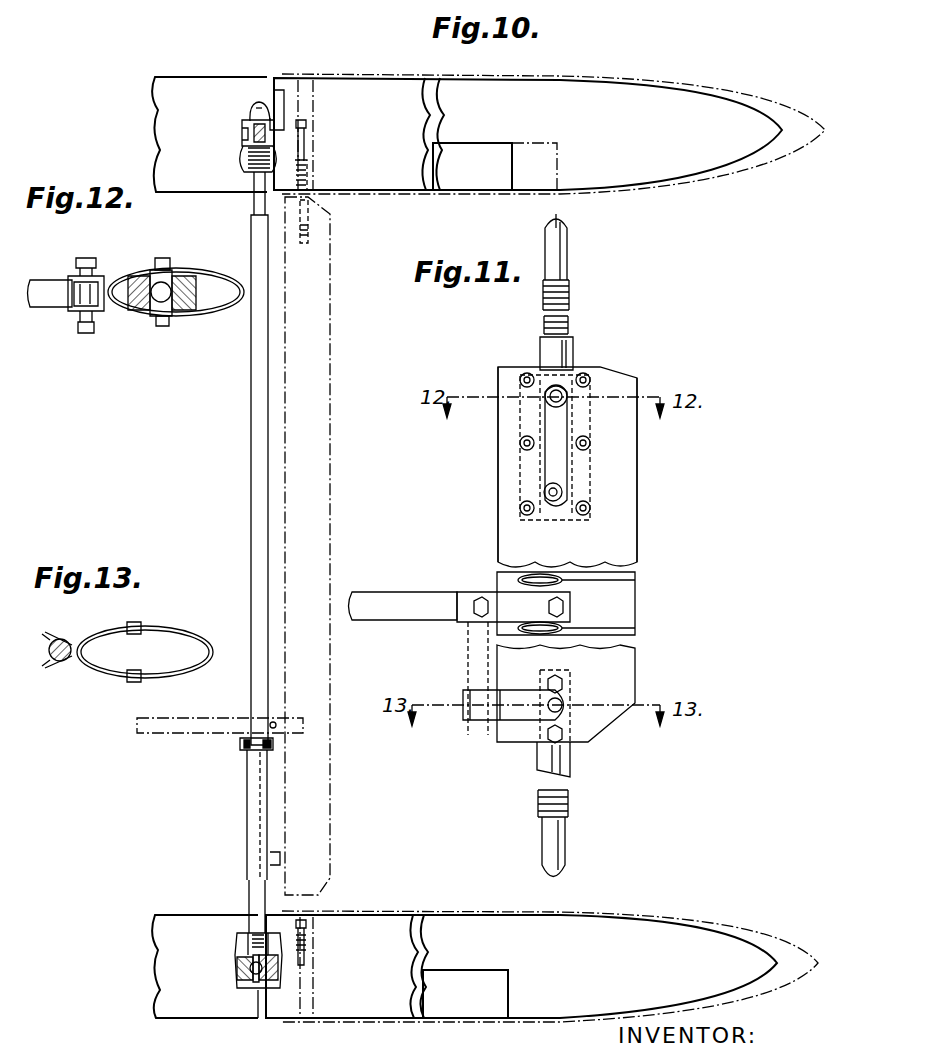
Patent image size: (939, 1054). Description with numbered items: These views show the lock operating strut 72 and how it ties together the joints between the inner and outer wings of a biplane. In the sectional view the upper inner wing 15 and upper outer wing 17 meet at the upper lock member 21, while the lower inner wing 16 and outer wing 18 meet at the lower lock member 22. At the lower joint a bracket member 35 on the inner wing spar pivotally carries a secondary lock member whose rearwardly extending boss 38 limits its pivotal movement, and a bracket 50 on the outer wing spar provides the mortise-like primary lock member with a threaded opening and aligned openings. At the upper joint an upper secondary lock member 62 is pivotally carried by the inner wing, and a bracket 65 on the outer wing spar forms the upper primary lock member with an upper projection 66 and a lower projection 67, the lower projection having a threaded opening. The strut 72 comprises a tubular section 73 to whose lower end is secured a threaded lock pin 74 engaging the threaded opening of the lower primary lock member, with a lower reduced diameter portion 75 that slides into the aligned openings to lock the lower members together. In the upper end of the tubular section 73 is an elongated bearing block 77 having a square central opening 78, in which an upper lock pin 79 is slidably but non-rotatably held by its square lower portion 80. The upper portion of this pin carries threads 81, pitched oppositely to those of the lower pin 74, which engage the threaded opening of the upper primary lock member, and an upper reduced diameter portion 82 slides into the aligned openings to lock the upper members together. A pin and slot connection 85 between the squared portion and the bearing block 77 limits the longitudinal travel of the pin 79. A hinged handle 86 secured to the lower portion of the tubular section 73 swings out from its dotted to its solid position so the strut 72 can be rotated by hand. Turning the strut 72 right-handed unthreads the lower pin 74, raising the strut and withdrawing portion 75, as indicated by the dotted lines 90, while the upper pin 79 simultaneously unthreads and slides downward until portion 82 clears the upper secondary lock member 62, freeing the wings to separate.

In FIG. 10, the upper inner wing 15 is at (190, 95).
In FIG. 10, the lower inner wing 16 is at (155, 995).
In FIG. 10, the upper outer wing 17 is at (575, 85).
In FIG. 10, the outer wing 18 is at (620, 925).
In FIG. 10, the lock member 21 is at (240, 145).
In FIG. 10, the lock member 22 is at (228, 935).
In FIG. 10, the bracket member 35 is at (250, 970).
In FIG. 10, the boss 38 is at (238, 962).
In FIG. 10, the bracket 50 is at (280, 966).
In FIG. 10, the upper secondary lock member 62 is at (241, 128).
In FIG. 10, the bracket 65 is at (276, 118).
In FIG. 10, the upper projection 66 is at (255, 118).
In FIG. 10, the lower projection 67 is at (250, 160).
In FIG. 10, the lock operating strut 72 is at (250, 436).
In FIG. 11, the lock operating strut 72 is at (640, 492).
In FIG. 11, the tubular section 73 is at (608, 548).
In FIG. 13, the tubular section 73 is at (170, 630).
In FIG. 10, the threaded lock pin 74 is at (268, 925).
In FIG. 11, the threaded lock pin 74 is at (570, 765).
In FIG. 11, the lower reduced diameter portion 75 is at (567, 838).
In FIG. 12, the bearing block 77 is at (190, 272).
In FIG. 12, the square central opening 78 is at (185, 318).
In FIG. 10, the upper lock pin 79 is at (252, 203).
In FIG. 11, the upper lock pin 79 is at (574, 357).
In FIG. 11, the lower portion 80 is at (595, 455).
In FIG. 12, the lower portion 80 is at (148, 275).
In FIG. 11, the threads 81 is at (572, 305).
In FIG. 11, the upper reduced diameter portion 82 is at (570, 245).
In FIG. 11, the pin and slot connection 85 is at (548, 398).
In FIG. 11, the hinged handle 86 is at (420, 592).
In FIG. 12, the hinged handle 86 is at (45, 308).
In FIG. 13, the hinged handle 86 is at (64, 662).
In FIG. 10, the dotted lines 90 is at (332, 812).